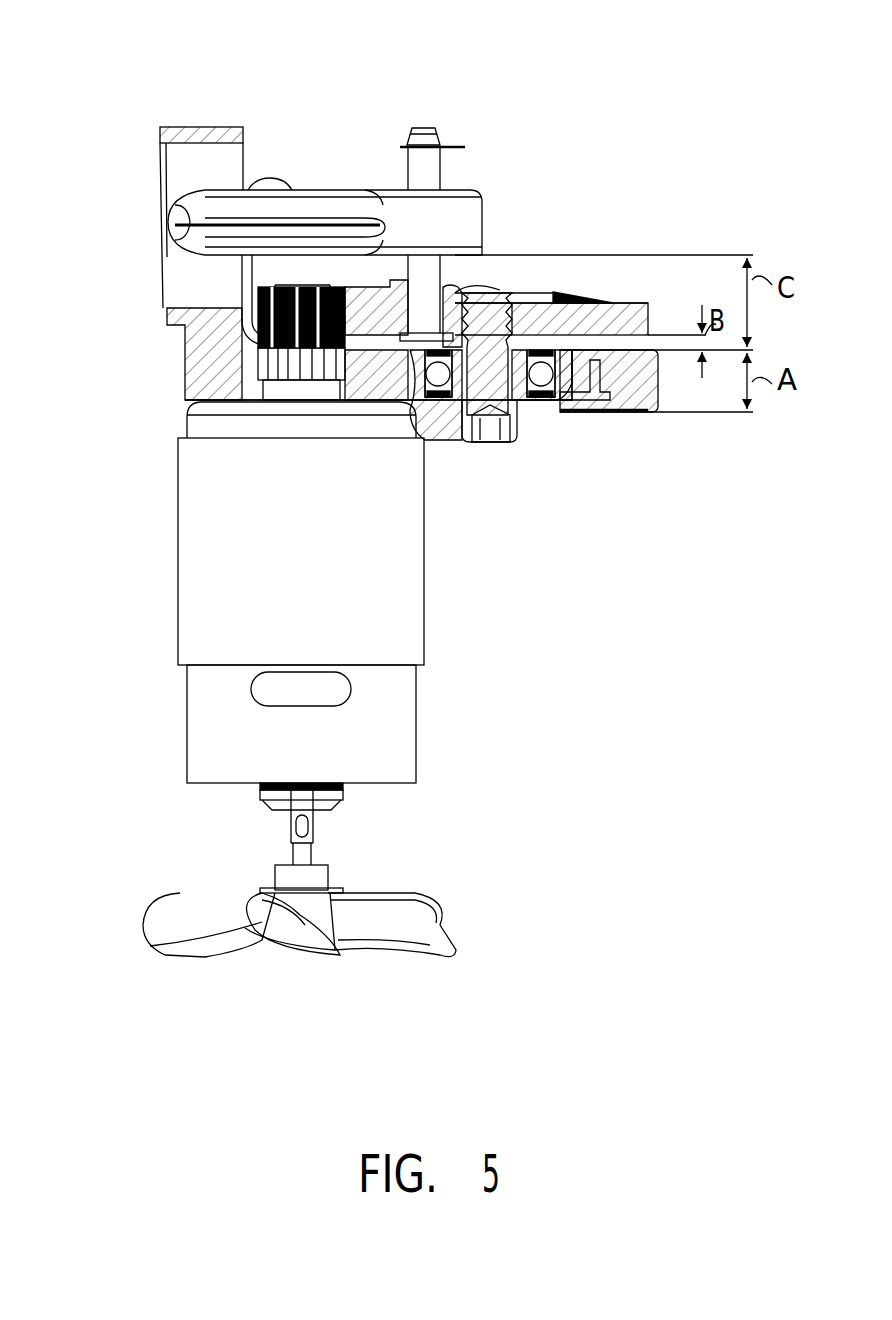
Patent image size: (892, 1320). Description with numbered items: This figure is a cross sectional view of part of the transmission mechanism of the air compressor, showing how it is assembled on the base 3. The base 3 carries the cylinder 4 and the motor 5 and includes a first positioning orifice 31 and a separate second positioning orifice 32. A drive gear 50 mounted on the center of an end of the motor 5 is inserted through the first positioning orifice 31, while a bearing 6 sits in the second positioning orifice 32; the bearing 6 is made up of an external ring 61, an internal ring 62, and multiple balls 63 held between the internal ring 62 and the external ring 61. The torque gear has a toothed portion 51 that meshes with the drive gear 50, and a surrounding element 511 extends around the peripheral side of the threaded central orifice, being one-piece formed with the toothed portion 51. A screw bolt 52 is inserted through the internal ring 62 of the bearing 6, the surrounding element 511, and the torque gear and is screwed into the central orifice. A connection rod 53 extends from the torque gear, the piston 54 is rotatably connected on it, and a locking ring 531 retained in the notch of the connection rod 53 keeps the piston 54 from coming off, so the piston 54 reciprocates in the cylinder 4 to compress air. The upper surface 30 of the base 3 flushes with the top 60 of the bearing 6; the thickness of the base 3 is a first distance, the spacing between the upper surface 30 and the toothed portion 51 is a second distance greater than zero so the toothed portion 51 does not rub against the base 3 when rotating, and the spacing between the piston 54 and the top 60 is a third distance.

The base 3 is at (650, 405).
The upper surface of the base 30 is at (600, 310).
The first positioning orifice 31 is at (238, 362).
The second positioning orifice 32 is at (565, 405).
The cylinder 4 is at (215, 133).
The motor 5 is at (385, 637).
The drive gear 50 is at (265, 300).
The toothed portion 51 is at (640, 310).
The surrounding element 511 is at (478, 262).
The screw bolt 52 is at (497, 402).
The connection rod 53 is at (430, 178).
The locking ring 531 is at (455, 148).
The piston 54 is at (336, 205).
The bearing 6 is at (480, 405).
The top of the bearing 60 is at (540, 285).
The external ring 61 is at (432, 402).
The internal ring 62 is at (538, 403).
The balls 63 is at (575, 403).